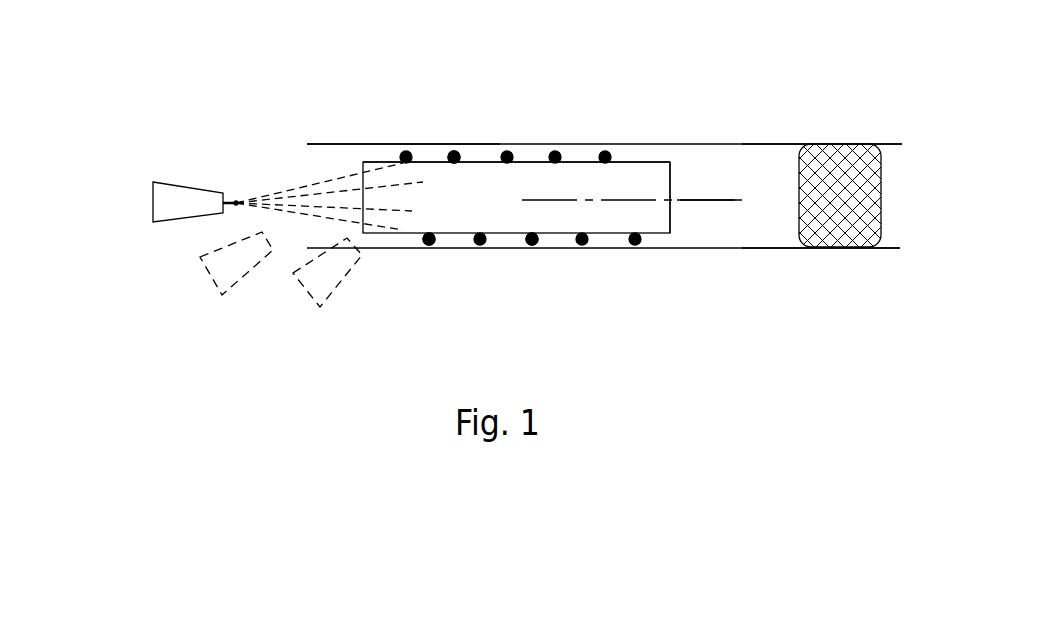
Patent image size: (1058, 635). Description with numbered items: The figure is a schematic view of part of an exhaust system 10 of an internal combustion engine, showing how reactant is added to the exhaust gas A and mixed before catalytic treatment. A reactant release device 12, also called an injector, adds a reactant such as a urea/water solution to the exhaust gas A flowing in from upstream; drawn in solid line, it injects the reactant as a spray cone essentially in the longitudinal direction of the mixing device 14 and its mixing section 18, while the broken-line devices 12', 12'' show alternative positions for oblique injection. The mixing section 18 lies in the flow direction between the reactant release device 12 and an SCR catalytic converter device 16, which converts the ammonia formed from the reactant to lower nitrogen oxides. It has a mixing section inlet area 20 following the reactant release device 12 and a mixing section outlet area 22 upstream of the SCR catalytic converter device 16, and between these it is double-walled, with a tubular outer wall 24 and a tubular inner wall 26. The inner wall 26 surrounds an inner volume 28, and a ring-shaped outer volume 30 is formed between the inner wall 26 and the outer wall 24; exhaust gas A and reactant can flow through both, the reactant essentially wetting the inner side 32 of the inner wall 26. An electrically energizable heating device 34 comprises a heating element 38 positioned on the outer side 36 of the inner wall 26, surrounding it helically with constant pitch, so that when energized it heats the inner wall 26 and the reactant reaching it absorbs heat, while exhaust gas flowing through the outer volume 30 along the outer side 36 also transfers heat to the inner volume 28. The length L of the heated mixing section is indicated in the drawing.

The exhaust system 10 is at (813, 58).
The exhaust gas A is at (263, 162).
The reactant release device 12 is at (240, 203).
The reactant release device 12' is at (186, 279).
The reactant release device 12'' is at (283, 298).
The mixing device 14 is at (543, 120).
The SCR catalytic converter device 16 is at (845, 223).
The mixing section 18 is at (603, 280).
The mixing section inlet area 20 is at (312, 163).
The mixing section outlet area 22 is at (768, 167).
The outer wall 24 is at (387, 144).
The inner wall 26 is at (463, 233).
The inner volume 28 is at (657, 178).
The outer volume 30 is at (553, 240).
The inner side 32 is at (568, 165).
The electrically energizable heating device 34 is at (462, 132).
The outer side 36 is at (646, 164).
The heating element 38 is at (423, 248).
The length L is at (720, 202).